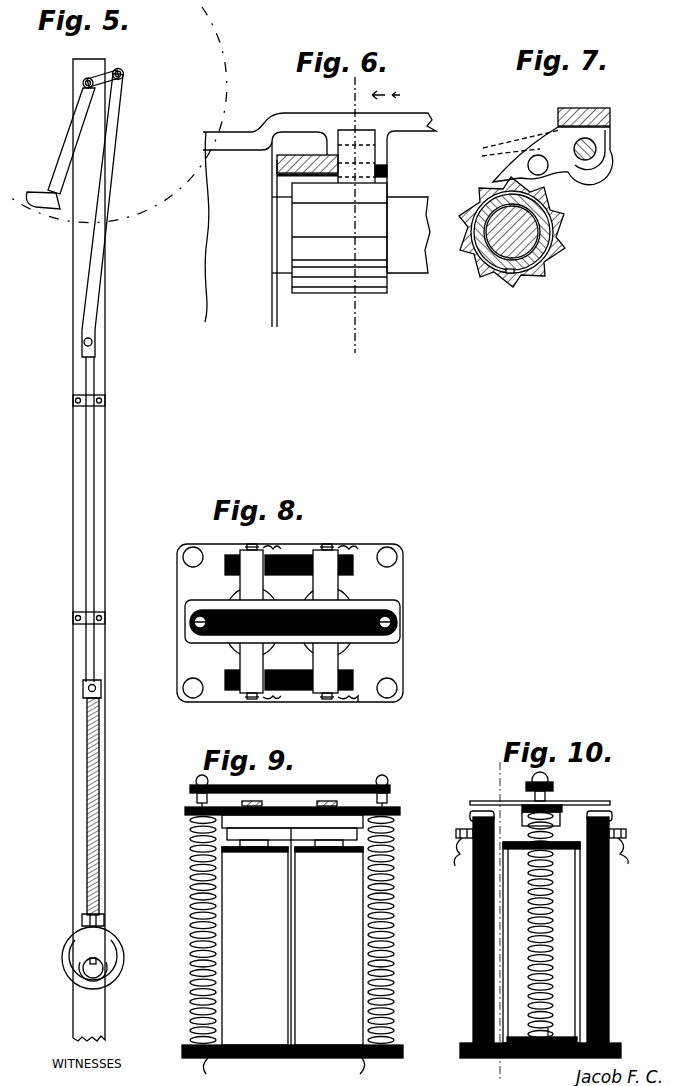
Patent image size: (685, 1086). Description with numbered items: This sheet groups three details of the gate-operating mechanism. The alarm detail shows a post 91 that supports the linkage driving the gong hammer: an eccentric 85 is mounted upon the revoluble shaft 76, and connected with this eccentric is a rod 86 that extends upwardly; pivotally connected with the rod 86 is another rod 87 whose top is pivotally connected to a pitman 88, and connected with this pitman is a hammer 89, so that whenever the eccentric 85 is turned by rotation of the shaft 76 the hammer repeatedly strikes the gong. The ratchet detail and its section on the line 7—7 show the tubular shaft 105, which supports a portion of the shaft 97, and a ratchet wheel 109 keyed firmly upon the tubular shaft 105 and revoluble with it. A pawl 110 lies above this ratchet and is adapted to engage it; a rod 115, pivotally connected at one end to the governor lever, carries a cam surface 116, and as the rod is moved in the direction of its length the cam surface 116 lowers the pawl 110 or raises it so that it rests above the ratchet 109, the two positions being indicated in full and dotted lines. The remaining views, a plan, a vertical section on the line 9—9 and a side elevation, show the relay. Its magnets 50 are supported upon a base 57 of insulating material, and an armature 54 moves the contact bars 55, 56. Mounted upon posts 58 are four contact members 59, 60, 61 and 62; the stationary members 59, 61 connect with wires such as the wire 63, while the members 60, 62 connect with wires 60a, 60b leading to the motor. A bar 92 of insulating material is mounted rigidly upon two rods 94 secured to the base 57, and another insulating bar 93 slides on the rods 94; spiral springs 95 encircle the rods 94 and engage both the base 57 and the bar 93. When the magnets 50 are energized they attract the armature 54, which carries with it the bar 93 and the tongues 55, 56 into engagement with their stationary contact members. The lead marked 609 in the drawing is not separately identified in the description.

In FIG. 5, the section line 9— 9 is at (228, 56).
In FIG. 5, the hammer 89 is at (63, 159).
In FIG. 5, the post 91 is at (80, 260).
In FIG. 5, the pitman 88 is at (93, 283).
In FIG. 5, the rod 87 is at (92, 520).
In FIG. 5, the rod 86 is at (95, 837).
In FIG. 5, the eccentric 85 is at (127, 957).
In FIG. 5, the revoluble shaft 76 is at (90, 973).
In FIG. 6, the section line 7— 7 is at (374, 224).
In FIG. 6, the rod 115 is at (280, 167).
In FIG. 6, the pawl 110 is at (360, 150).
In FIG. 7, the pawl 110 is at (552, 148).
In FIG. 6, the cam surface 116 is at (385, 170).
In FIG. 7, the cam surface 116 is at (548, 172).
In FIG. 6, the ratchet wheel 109 is at (365, 212).
In FIG. 7, the ratchet wheel 109 is at (563, 258).
In FIG. 6, the tubular shaft 105 is at (420, 208).
In FIG. 7, the tubular shaft 105 is at (490, 210).
In FIG. 7, the shaft 97 is at (500, 258).
In FIG. 8, the contact member 60 is at (232, 552).
In FIG. 8, the wire 60a is at (275, 540).
In FIG. 8, the wire 60b is at (350, 700).
In FIG. 8, the contact member 61 is at (307, 552).
In FIG. 8, the contact member 62 is at (310, 693).
In FIG. 8, the contact member 59 is at (240, 693).
In FIG. 10, the contact member 59 is at (608, 816).
In FIG. 8, the contact bar 56 is at (250, 582).
In FIG. 9, the contact bar 56 is at (258, 801).
In FIG. 10, the contact bar 56 is at (560, 804).
In FIG. 8, the contact bar 55 is at (330, 579).
In FIG. 9, the contact bar 55 is at (333, 801).
In FIG. 8, the posts 58 is at (275, 600).
In FIG. 10, the posts 58 is at (473, 955).
In FIG. 8, the bar of insulating material 92 is at (385, 606).
In FIG. 9, the bar of insulating material 92 is at (228, 786).
In FIG. 10, the bar of insulating material 92 is at (548, 784).
In FIG. 8, the bar of insulating material 93 is at (200, 607).
In FIG. 9, the bar of insulating material 93 is at (398, 808).
In FIG. 10, the bar of insulating material 93 is at (538, 931).
In FIG. 9, the armature 54 is at (277, 822).
In FIG. 10, the armature 54 is at (556, 818).
In FIG. 9, the magnets 50 is at (292, 942).
In FIG. 10, the magnets 50 is at (565, 934).
In FIG. 9, the rods 94 is at (195, 880).
In FIG. 10, the rods 94 is at (532, 928).
In FIG. 9, the spiral springs 95 is at (195, 896).
In FIG. 10, the spiral springs 95 is at (530, 920).
In FIG. 9, the base 57 is at (398, 1046).
In FIG. 10, the wire 63 is at (630, 860).
In FIG. 10, the terminal wire 609 is at (471, 829).